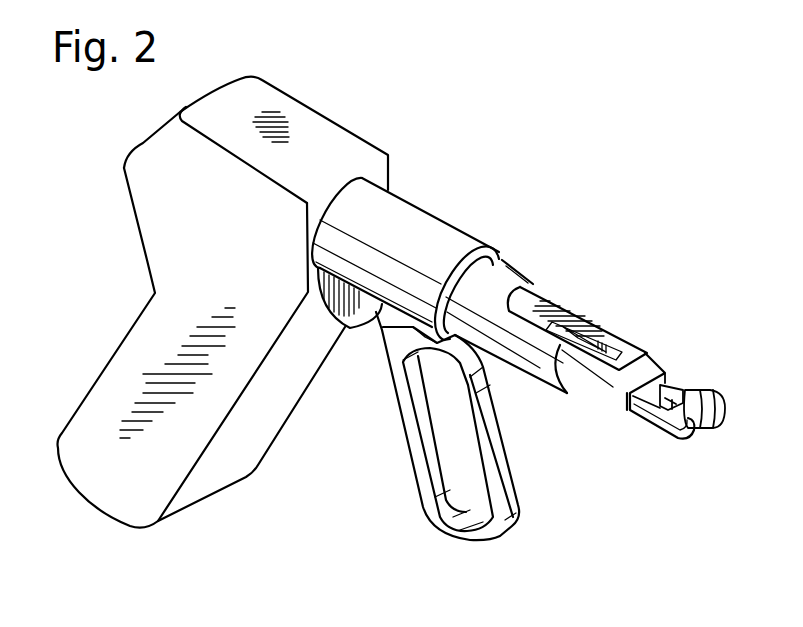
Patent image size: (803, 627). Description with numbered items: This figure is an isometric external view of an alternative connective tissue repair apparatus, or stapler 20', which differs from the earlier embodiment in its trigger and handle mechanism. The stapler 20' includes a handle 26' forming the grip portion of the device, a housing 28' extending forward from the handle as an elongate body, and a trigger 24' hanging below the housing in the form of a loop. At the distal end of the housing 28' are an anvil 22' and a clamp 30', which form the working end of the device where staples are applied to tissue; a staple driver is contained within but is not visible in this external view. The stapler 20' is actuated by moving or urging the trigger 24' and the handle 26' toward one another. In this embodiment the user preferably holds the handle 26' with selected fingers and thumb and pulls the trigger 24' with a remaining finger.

The connective tissue repair apparatus 20' is at (392, 310).
The anvil 22' is at (726, 398).
The trigger 24' is at (470, 426).
The handle 26' is at (223, 302).
The housing 28' is at (503, 308).
The clamp 30' is at (666, 376).